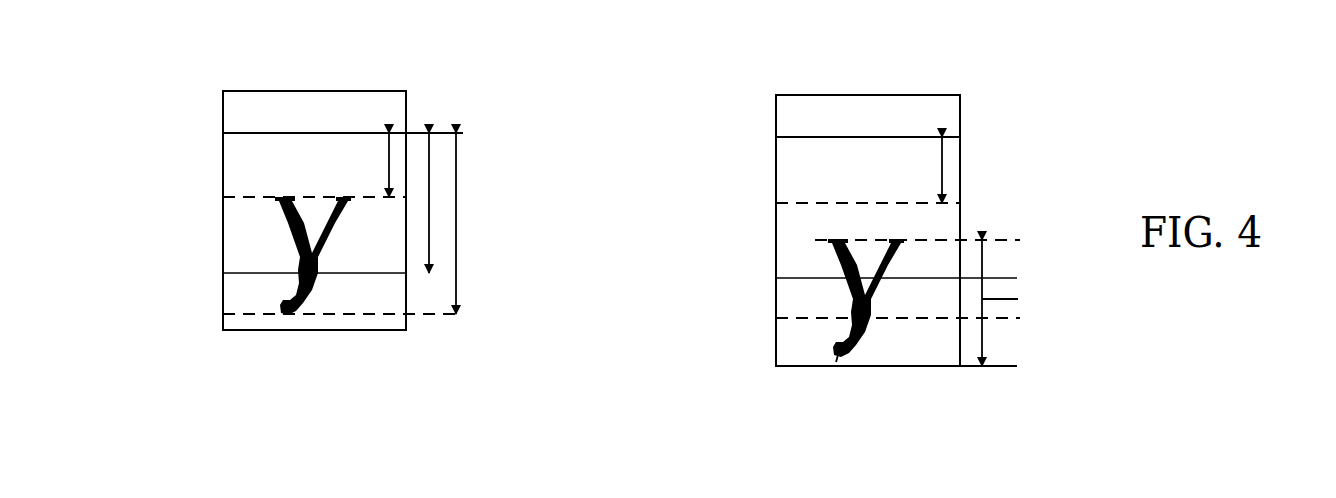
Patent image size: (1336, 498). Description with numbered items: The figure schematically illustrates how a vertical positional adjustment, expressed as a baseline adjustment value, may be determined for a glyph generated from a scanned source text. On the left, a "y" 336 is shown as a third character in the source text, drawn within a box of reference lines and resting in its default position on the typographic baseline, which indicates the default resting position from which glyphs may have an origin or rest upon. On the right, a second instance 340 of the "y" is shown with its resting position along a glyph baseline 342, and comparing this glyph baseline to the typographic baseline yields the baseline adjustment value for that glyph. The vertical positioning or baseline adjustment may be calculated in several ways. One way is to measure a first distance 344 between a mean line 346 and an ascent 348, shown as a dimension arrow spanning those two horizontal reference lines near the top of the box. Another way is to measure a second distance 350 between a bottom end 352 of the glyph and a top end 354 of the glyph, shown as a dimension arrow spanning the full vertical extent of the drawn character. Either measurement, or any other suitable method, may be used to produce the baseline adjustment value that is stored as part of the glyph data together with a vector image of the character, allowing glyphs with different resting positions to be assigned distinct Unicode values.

The "y" character 336 is at (341, 62).
The second instance of "y" 340 is at (893, 55).
The glyph baseline 342 is at (785, 322).
The first distance 344 is at (938, 163).
The mean line 346 is at (798, 207).
The ascent 348 is at (791, 140).
The second distance 350 is at (1024, 303).
The bottom end of the glyph 352 is at (838, 358).
The top end of the glyph 354 is at (838, 238).